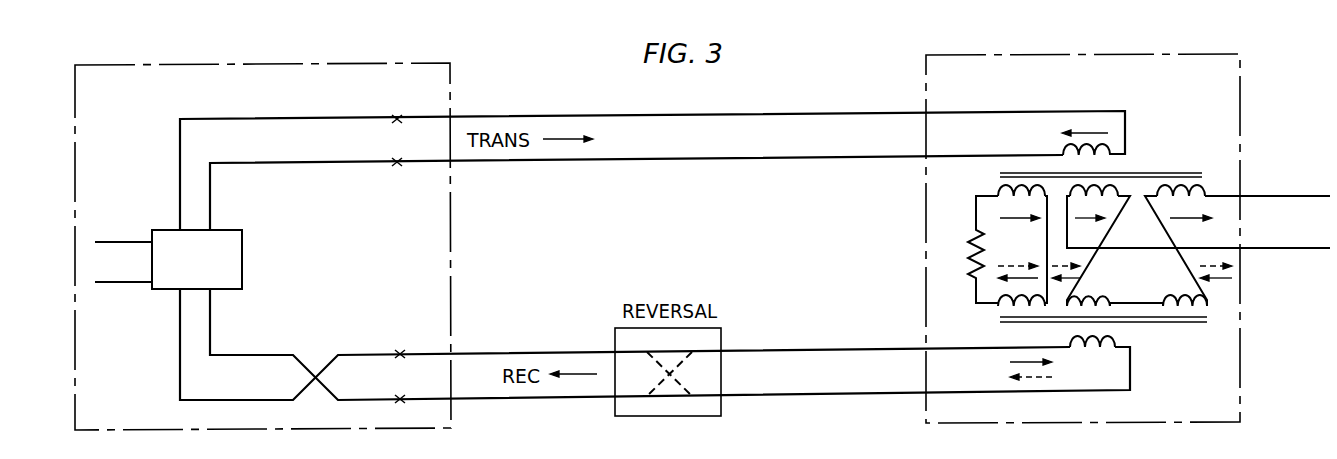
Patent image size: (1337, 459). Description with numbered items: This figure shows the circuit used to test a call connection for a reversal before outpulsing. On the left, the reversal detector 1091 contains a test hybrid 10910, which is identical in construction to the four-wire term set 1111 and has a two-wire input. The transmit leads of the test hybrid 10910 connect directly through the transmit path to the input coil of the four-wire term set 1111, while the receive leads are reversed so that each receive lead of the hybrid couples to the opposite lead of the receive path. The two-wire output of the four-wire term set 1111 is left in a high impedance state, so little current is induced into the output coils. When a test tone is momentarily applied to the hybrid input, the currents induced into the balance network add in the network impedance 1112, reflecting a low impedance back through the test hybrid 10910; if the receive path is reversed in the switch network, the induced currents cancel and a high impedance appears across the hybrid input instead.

The reversal detector 1091 is at (450, 63).
The test hybrid 10910 is at (242, 258).
The four-wire term set 1111 is at (1240, 63).
The network impedance 1112 is at (968, 255).